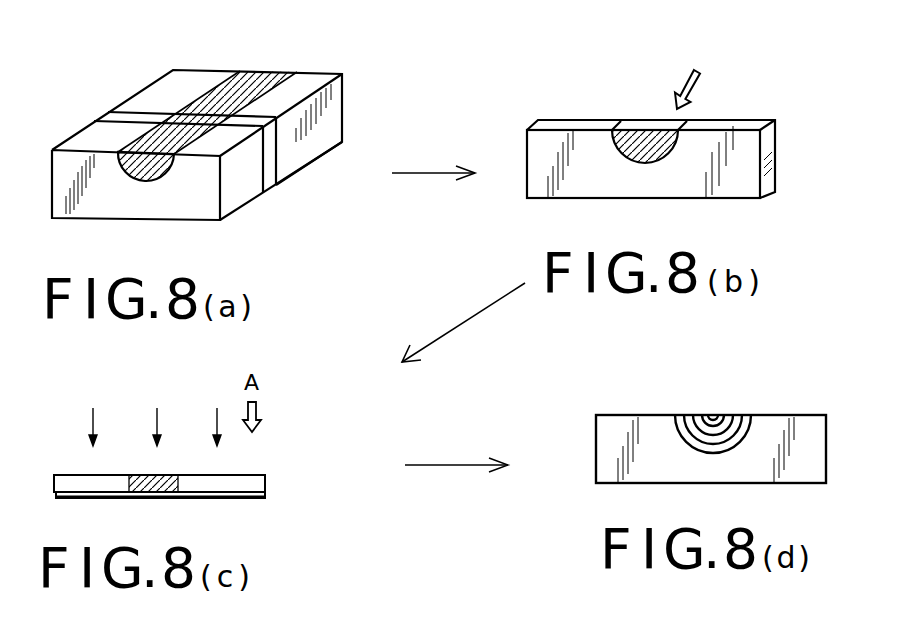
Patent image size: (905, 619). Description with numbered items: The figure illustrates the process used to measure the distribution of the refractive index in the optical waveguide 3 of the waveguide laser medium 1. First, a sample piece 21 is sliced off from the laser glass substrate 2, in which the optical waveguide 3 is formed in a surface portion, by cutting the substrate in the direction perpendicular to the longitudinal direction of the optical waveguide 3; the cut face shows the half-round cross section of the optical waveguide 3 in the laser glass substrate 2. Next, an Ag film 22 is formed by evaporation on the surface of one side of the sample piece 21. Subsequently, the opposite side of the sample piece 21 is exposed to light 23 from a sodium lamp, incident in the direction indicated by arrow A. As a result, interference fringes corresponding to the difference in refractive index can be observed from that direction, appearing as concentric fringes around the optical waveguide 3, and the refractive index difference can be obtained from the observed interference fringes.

The waveguide laser medium 1 is at (221, 169).
The laser glass substrate 2 is at (240, 212).
The sample piece 21 is at (268, 173).
The optical waveguide 3 is at (125, 181).
The Ag film 22 is at (240, 500).
The light 23 is at (92, 417).